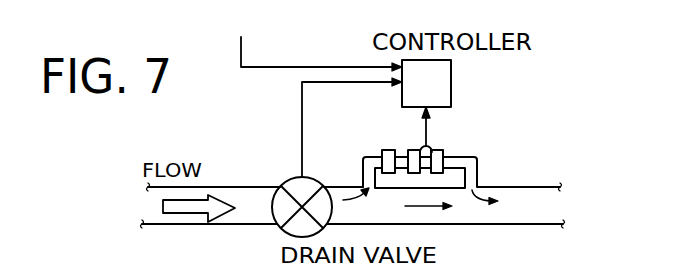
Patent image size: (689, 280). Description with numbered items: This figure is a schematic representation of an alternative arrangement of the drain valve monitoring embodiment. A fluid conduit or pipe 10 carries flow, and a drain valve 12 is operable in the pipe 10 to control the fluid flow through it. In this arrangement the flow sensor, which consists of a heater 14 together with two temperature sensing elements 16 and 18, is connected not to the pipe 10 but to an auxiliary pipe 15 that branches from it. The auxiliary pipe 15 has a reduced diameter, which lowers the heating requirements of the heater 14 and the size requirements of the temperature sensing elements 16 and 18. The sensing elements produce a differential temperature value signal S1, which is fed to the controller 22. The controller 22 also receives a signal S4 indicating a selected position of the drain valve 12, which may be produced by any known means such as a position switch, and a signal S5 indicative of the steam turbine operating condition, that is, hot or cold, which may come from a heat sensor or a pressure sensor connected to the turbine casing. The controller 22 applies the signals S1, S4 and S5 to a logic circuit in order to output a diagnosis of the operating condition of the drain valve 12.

The fluid conduit or pipe 10 is at (466, 226).
The drain valve 12 is at (282, 227).
The heater 14 is at (392, 149).
The auxiliary pipe 15 is at (478, 172).
The temperature sensing element 16 is at (408, 149).
The temperature sensing element 18 is at (445, 150).
The controller 22 is at (426, 83).
The differential temperature value signal S1 is at (428, 121).
The drain valve position signal S4 is at (301, 142).
The steam turbine operating condition signal S5 is at (312, 42).